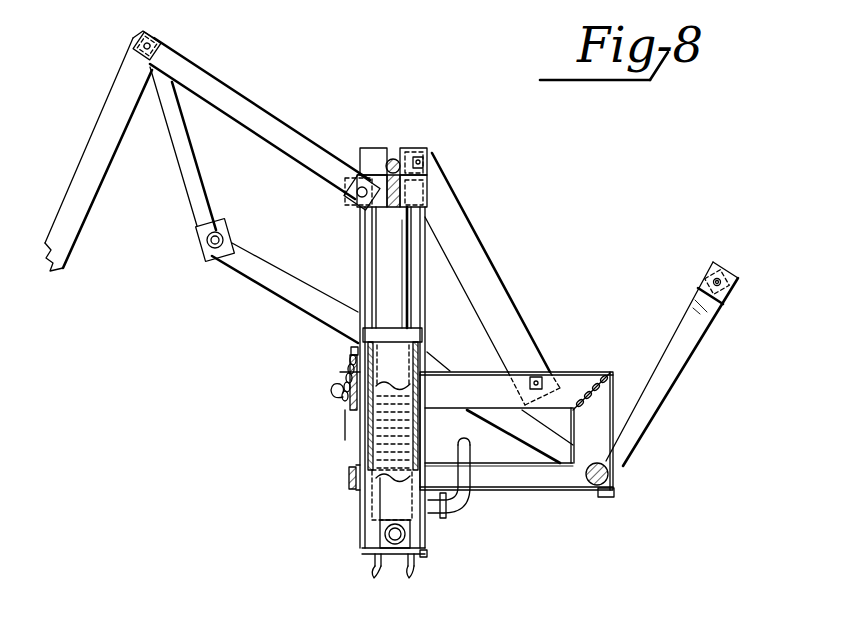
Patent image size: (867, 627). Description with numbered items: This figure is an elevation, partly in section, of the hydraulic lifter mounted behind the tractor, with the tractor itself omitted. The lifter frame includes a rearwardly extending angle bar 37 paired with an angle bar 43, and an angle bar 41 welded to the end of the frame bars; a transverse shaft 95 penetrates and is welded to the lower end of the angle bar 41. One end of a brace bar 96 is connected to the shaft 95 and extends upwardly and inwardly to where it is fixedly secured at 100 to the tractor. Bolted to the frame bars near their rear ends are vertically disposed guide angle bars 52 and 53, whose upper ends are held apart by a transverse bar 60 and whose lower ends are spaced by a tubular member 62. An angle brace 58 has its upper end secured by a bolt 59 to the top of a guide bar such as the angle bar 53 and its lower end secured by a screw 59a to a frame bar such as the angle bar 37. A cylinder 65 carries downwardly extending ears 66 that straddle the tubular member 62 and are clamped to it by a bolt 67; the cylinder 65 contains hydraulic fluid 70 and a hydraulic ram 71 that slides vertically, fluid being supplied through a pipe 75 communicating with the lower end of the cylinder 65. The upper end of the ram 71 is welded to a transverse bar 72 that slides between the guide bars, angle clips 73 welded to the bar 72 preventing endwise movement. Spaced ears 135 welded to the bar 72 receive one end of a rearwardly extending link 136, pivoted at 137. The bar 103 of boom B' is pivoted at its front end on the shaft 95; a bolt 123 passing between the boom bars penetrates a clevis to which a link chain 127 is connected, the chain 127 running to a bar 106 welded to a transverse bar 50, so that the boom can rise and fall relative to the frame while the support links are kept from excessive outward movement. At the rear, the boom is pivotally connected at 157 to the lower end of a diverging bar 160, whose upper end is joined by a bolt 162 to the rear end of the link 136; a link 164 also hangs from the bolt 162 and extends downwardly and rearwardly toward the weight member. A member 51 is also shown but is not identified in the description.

The bolt 162 is at (139, 45).
The link 164 is at (103, 182).
The link 136 is at (246, 106).
The diverging bar 160 is at (207, 176).
The pivotal connection 157 is at (228, 232).
The bar 103 is at (305, 311).
The angle bar 52 is at (375, 147).
The transverse bar 60 is at (394, 158).
The angle bar 53 is at (420, 148).
The bolt 59 is at (426, 158).
The angle clip 73 is at (370, 170).
The pivot 137 is at (349, 194).
The ear 135 is at (350, 208).
The hydraulic ram 71 is at (371, 268).
The transverse bar 72 is at (404, 212).
The hydraulic fluid 70 is at (411, 428).
The cylinder 65 is at (378, 510).
The tubular member 62 is at (408, 536).
The ear 66 is at (393, 567).
The bolt 67 is at (428, 555).
The bracket 51 is at (348, 477).
The bolt 123 is at (350, 351).
The link chain 127 is at (342, 371).
The horizontally disposed bar 106 is at (339, 396).
The transverse bar 50 is at (309, 442).
The angle brace 58 is at (503, 278).
The screw 59a is at (536, 375).
The angle bar 37 is at (570, 373).
The angle bar 41 is at (613, 386).
The angle bar 43 is at (516, 483).
The pipe 75 is at (471, 456).
The transverse shaft 95 is at (610, 479).
The brace bar 96 is at (690, 359).
The securing point 100 is at (728, 286).